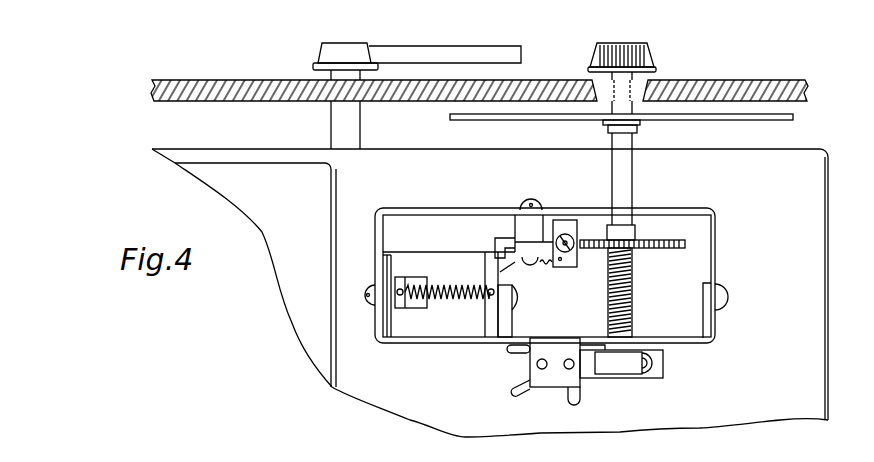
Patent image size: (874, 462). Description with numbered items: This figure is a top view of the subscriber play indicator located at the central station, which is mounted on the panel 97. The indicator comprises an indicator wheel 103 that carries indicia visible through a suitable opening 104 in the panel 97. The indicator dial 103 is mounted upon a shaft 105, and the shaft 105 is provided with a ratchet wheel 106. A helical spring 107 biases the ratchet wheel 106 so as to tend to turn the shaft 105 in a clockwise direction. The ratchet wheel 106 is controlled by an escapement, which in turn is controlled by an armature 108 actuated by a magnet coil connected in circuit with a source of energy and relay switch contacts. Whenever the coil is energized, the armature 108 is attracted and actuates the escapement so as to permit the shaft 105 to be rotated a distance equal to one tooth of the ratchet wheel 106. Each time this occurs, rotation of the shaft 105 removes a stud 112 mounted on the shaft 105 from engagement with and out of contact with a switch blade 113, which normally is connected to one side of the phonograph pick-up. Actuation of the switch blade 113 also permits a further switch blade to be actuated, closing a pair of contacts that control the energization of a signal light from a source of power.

The panel 97 is at (178, 80).
The indicator wheel 103 is at (628, 127).
The opening 104 is at (644, 86).
The shaft 105 is at (623, 194).
The ratchet wheel 106 is at (656, 242).
The helical spring 107 is at (578, 235).
The armature 108 is at (486, 322).
The stud 112 is at (657, 363).
The switch blade 113 is at (662, 375).